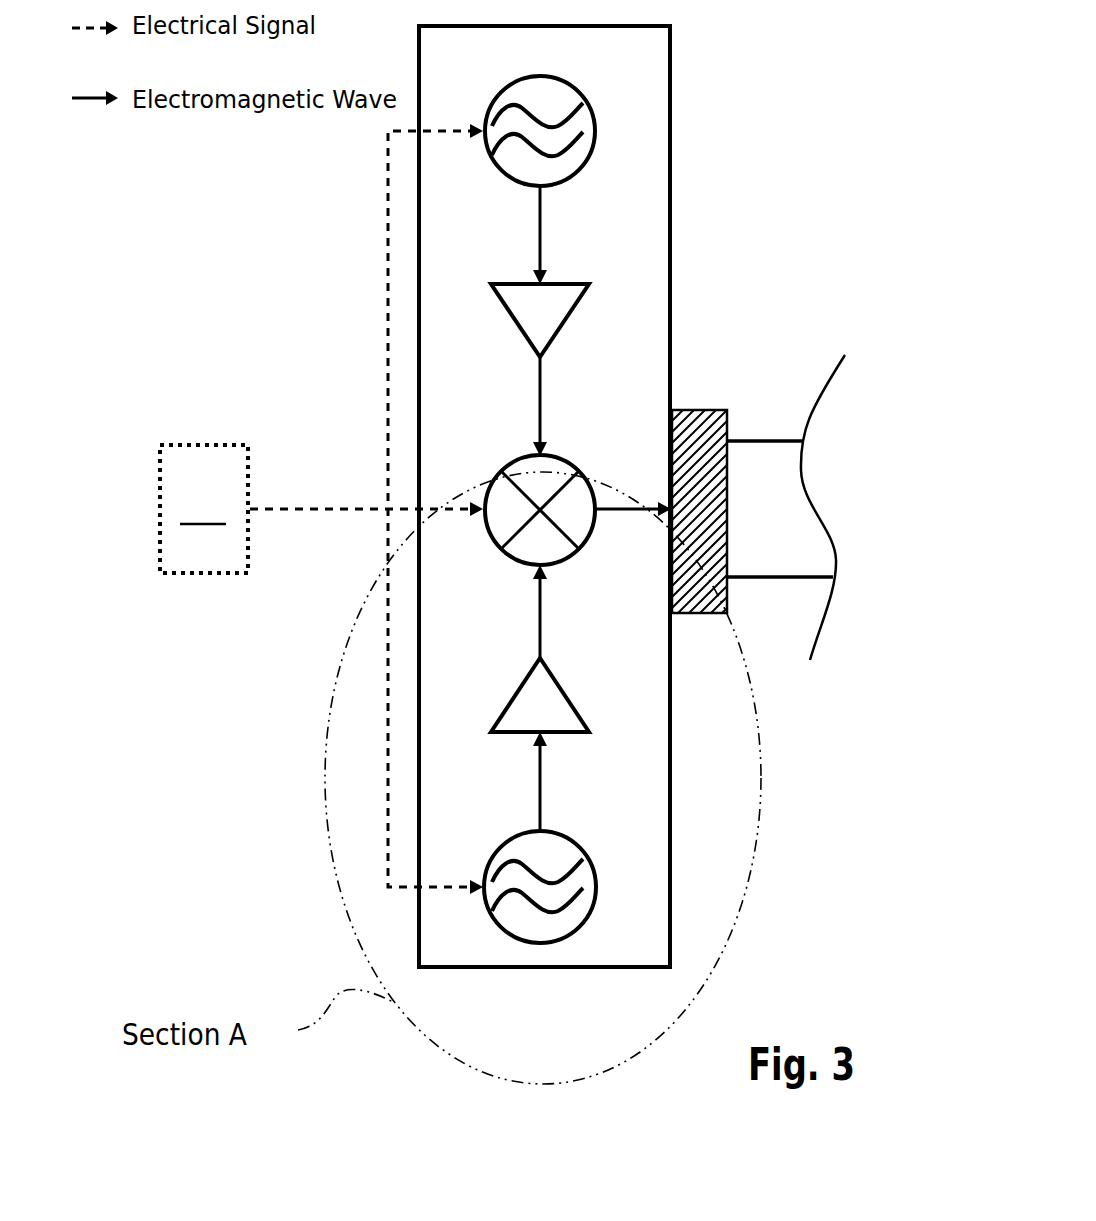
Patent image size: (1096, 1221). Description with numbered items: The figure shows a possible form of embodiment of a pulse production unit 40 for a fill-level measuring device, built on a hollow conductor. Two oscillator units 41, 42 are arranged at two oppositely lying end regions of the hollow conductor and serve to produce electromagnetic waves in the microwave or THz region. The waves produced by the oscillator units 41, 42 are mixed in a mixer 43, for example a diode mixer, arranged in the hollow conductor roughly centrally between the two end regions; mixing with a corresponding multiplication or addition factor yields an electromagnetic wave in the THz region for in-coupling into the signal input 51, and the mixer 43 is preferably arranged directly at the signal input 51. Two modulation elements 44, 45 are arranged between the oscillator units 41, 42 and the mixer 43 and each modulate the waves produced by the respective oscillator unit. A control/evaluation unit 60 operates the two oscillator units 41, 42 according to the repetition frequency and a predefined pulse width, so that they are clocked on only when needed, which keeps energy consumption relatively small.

The pulse production unit 40 is at (670, 110).
The oscillator unit 41 is at (590, 860).
The oscillator unit 42 is at (563, 183).
The mixer 43 is at (515, 458).
The modulation element 44 is at (567, 697).
The modulation element 45 is at (567, 318).
The signal input 51 is at (700, 410).
The control/evaluation unit 60 is at (160, 492).